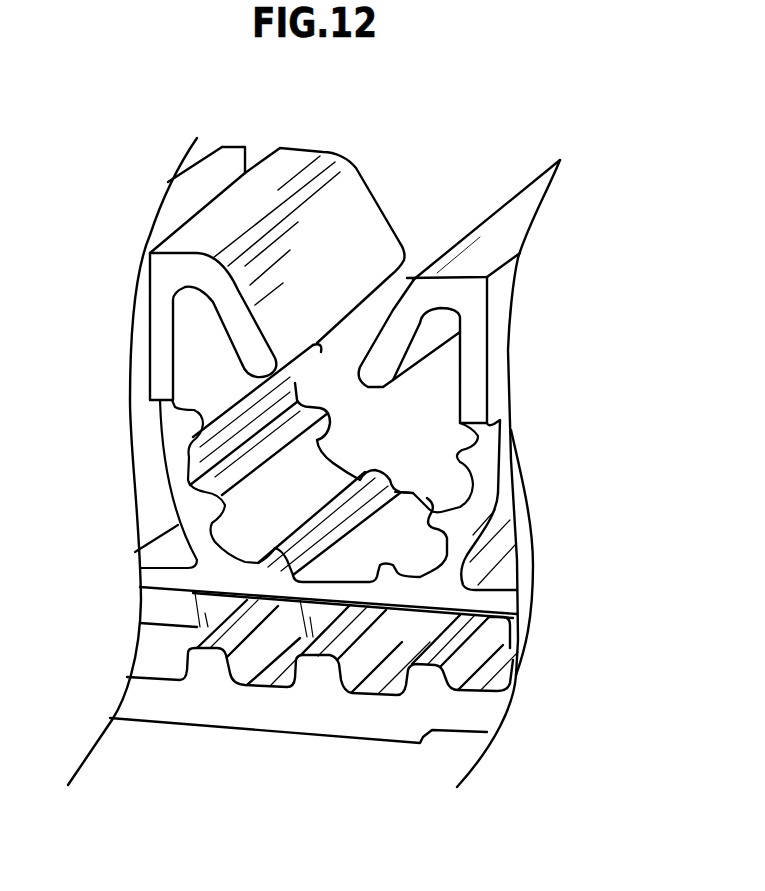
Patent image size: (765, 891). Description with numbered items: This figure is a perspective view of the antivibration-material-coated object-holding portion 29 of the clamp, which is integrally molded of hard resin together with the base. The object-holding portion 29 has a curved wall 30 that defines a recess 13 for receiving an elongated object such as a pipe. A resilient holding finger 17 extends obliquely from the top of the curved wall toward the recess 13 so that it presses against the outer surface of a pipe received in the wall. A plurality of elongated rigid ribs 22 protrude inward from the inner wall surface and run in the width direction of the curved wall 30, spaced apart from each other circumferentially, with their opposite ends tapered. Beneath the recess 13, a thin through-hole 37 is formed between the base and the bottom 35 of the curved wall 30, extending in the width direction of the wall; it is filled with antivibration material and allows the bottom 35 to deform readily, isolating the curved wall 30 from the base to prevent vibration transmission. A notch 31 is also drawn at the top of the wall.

The recess 13 is at (372, 448).
The resilient holding finger 17 is at (370, 207).
The ribs 22 is at (237, 430).
The object-holding portion 29 is at (455, 190).
The curved wall 30 is at (178, 419).
The notch 31 is at (255, 163).
The bottom 35 is at (357, 557).
The through-hole 37 is at (320, 635).